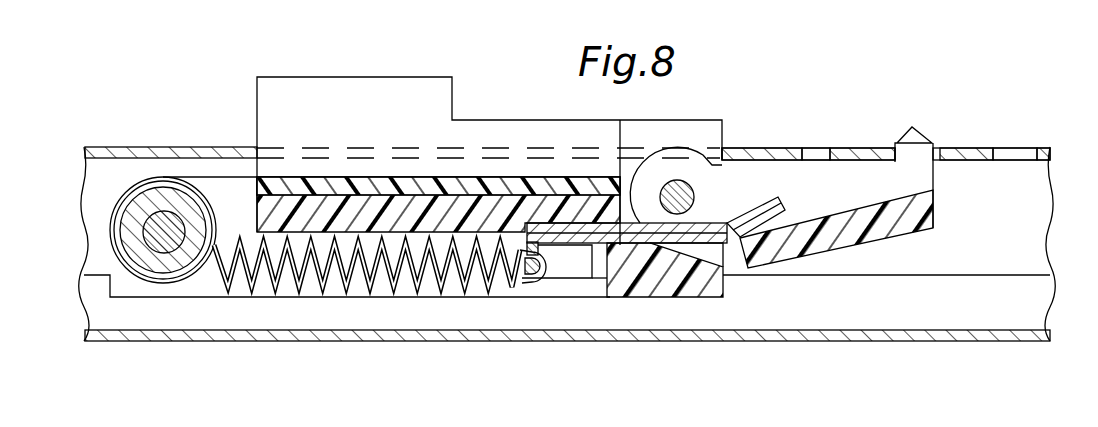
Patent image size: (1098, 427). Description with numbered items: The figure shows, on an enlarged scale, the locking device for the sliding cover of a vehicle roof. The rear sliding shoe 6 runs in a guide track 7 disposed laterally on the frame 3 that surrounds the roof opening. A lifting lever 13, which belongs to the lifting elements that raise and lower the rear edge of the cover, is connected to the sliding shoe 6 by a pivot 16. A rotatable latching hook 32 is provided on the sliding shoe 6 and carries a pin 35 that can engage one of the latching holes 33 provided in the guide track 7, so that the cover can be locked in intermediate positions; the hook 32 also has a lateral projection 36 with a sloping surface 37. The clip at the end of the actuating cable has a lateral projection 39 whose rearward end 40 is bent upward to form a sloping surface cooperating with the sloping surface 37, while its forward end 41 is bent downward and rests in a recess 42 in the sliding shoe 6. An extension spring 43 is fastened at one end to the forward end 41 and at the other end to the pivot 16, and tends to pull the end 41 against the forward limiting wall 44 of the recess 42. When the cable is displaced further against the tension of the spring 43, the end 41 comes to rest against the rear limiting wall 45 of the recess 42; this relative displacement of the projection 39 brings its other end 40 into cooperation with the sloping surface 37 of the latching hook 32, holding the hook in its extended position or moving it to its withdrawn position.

The frame 3 is at (250, 338).
The rear sliding shoe 6 is at (387, 98).
The guide track 7 is at (192, 152).
The lifting lever 13 is at (123, 247).
The pivot 16 is at (130, 222).
The latching hook 32 is at (836, 212).
The latching hole 33 is at (1013, 155).
The pin 35 is at (923, 155).
The lateral projection 36 is at (877, 233).
The sloping surface 37 is at (828, 210).
The lateral projection 39 is at (576, 243).
The rearward end 40 is at (755, 215).
The forward end 41 is at (522, 284).
The recess 42 is at (555, 268).
The extension spring 43 is at (320, 283).
The forward limiting wall 44 is at (507, 283).
The rear limiting wall 45 is at (606, 267).